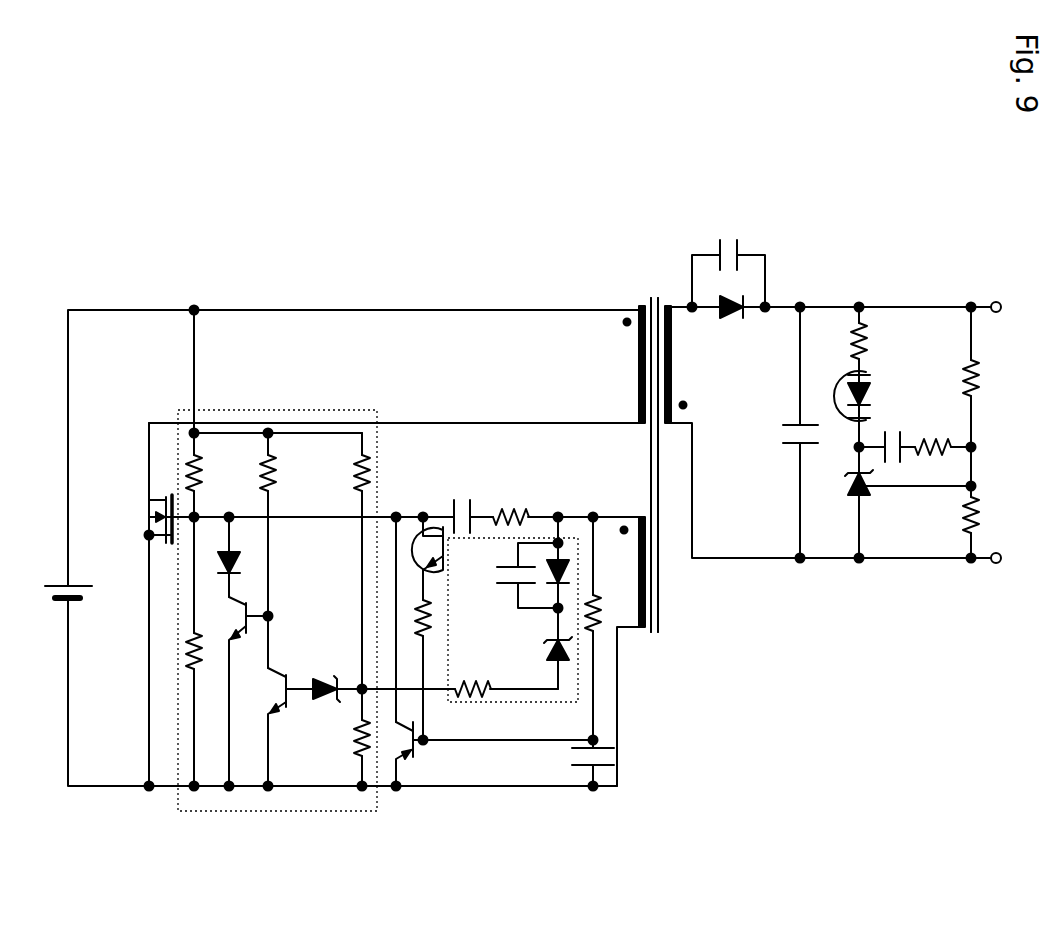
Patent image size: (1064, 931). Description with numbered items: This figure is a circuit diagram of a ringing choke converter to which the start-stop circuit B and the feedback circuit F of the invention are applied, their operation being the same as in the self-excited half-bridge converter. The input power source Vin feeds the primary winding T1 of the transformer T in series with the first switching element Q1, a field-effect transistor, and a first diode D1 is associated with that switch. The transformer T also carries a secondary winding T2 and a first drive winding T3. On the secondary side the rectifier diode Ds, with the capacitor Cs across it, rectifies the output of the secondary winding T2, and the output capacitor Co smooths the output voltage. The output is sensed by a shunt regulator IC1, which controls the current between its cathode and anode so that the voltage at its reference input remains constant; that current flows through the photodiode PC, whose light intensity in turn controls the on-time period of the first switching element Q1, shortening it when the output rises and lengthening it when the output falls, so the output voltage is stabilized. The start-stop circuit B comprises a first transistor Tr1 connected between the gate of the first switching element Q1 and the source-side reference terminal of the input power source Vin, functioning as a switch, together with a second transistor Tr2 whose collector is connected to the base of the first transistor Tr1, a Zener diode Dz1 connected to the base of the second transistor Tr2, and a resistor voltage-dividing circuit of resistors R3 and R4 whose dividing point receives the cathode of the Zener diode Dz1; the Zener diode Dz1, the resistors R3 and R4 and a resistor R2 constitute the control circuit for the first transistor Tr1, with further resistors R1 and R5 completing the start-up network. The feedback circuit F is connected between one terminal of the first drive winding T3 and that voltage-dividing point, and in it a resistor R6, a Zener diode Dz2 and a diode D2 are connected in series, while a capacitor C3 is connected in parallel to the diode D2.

The input power source Vin is at (75, 578).
The first switching element Q1 is at (161, 495).
The resistor R1 is at (208, 473).
The resistor R2 is at (285, 473).
The resistor R3 is at (379, 473).
The resistor R4 is at (343, 738).
The resistor R5 is at (177, 660).
The resistor R6 is at (473, 680).
The first diode D1 is at (240, 557).
The diode D2 is at (525, 578).
The Zener diode Dz1 is at (334, 677).
The Zener diode Dz2 is at (538, 663).
The first transistor Tr1 is at (267, 691).
The second transistor Tr2 is at (274, 727).
The capacitor C3 is at (522, 575).
The transformer T is at (652, 454).
The primary winding T1 is at (624, 364).
The secondary winding T2 is at (685, 364).
The first drive winding T3 is at (623, 572).
The rectifier diode Ds is at (732, 319).
The capacitor Cs is at (745, 273).
The output capacitor Co is at (782, 435).
The photodiode PC is at (841, 372).
The shunt regulator IC1 is at (845, 500).
The start-stop circuit B is at (342, 631).
The feedback circuit F is at (513, 635).